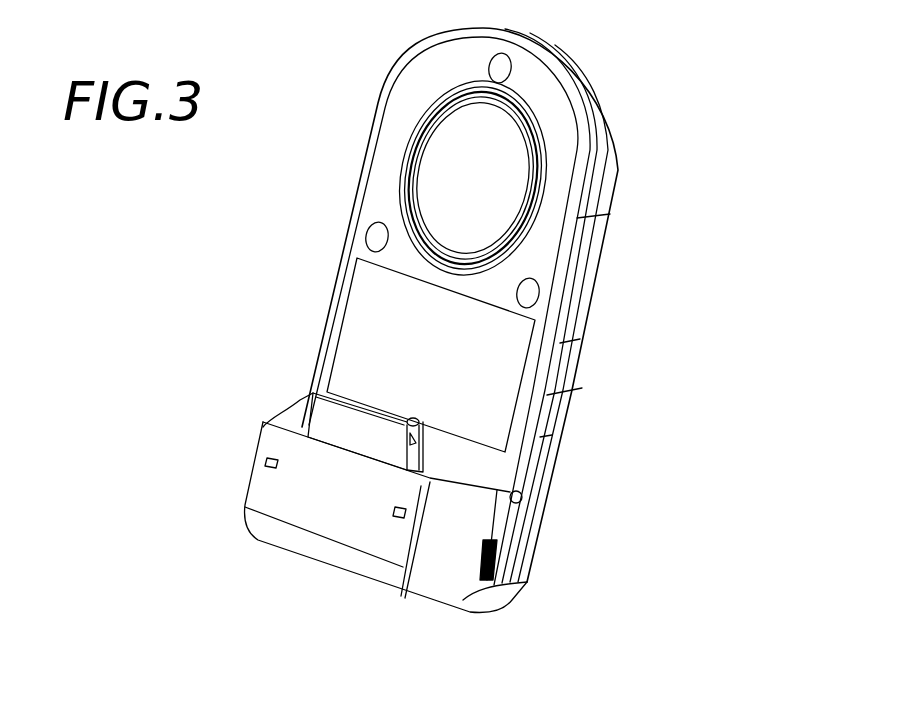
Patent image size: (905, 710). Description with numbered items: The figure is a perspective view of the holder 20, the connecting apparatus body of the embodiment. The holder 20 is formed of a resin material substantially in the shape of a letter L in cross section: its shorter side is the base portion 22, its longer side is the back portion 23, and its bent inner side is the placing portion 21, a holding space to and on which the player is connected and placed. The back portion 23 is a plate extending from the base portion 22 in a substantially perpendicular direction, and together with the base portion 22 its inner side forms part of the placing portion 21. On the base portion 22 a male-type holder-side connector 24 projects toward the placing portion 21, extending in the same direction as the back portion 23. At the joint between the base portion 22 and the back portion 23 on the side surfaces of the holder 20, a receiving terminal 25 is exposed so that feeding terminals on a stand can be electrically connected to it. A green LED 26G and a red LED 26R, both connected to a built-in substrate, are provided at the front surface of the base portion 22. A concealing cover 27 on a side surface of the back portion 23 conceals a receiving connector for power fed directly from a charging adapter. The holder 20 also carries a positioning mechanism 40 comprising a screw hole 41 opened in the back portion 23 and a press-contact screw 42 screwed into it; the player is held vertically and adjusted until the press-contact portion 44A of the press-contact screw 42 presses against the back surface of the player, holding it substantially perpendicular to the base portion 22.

The holder 20 is at (643, 138).
The placing portion 21 is at (372, 337).
The base portion 22 is at (283, 537).
The back portion 23 is at (590, 283).
The holder-side connector 24 is at (330, 417).
The receiving terminal 25 is at (519, 499).
The green LED 26G is at (268, 463).
The red LED 26R is at (398, 518).
The concealing cover 27 is at (567, 395).
The positioning mechanism 40 is at (345, 62).
The screw hole 41 is at (458, 105).
The press-contact screw 42 is at (443, 172).
The press-contact portion 44A is at (500, 163).